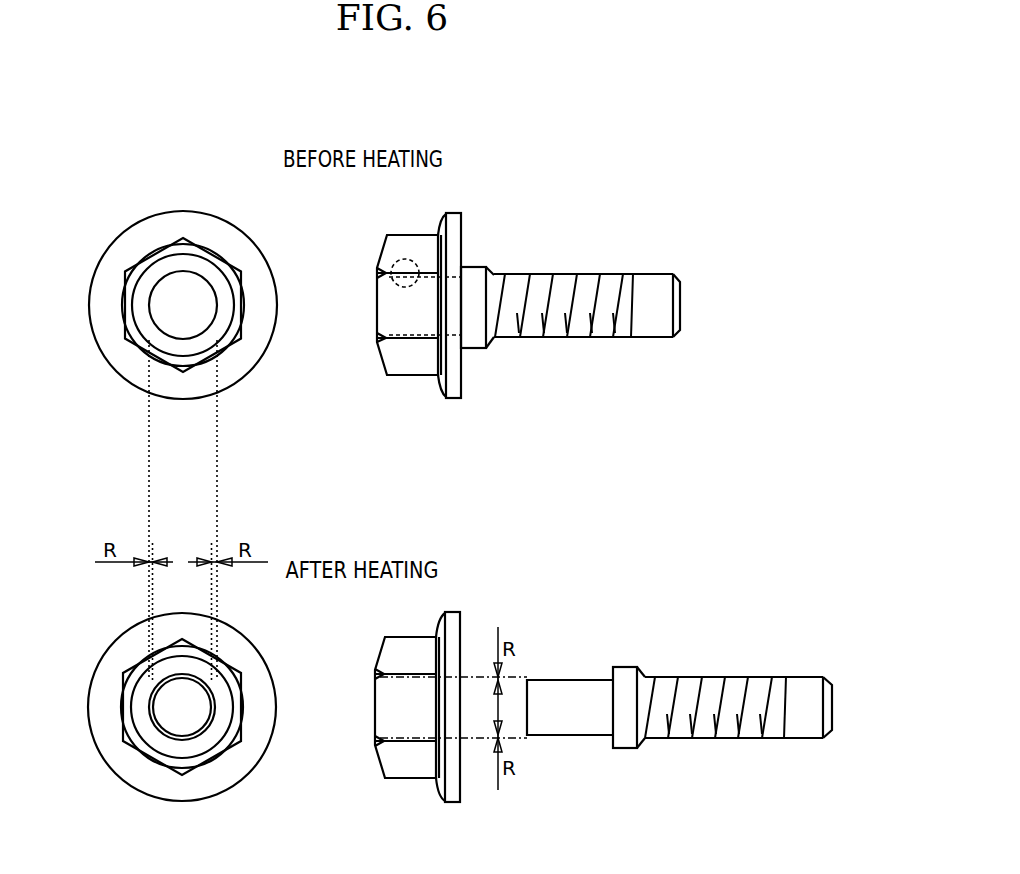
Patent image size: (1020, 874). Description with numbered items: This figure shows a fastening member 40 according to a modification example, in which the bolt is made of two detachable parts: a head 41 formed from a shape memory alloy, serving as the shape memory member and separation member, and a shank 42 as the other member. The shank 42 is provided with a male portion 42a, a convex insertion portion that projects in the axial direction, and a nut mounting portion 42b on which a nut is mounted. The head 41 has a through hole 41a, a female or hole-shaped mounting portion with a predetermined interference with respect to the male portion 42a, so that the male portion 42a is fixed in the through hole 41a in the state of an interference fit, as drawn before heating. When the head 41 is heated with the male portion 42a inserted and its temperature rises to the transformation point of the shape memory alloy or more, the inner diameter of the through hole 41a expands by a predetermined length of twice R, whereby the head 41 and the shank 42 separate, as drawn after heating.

The fastening member 40 is at (656, 217).
The head 41 is at (215, 220).
The through hole 41a is at (160, 282).
The shank 42 is at (196, 303).
The male portion 42a is at (203, 275).
The nut mounting portion 42b is at (563, 273).